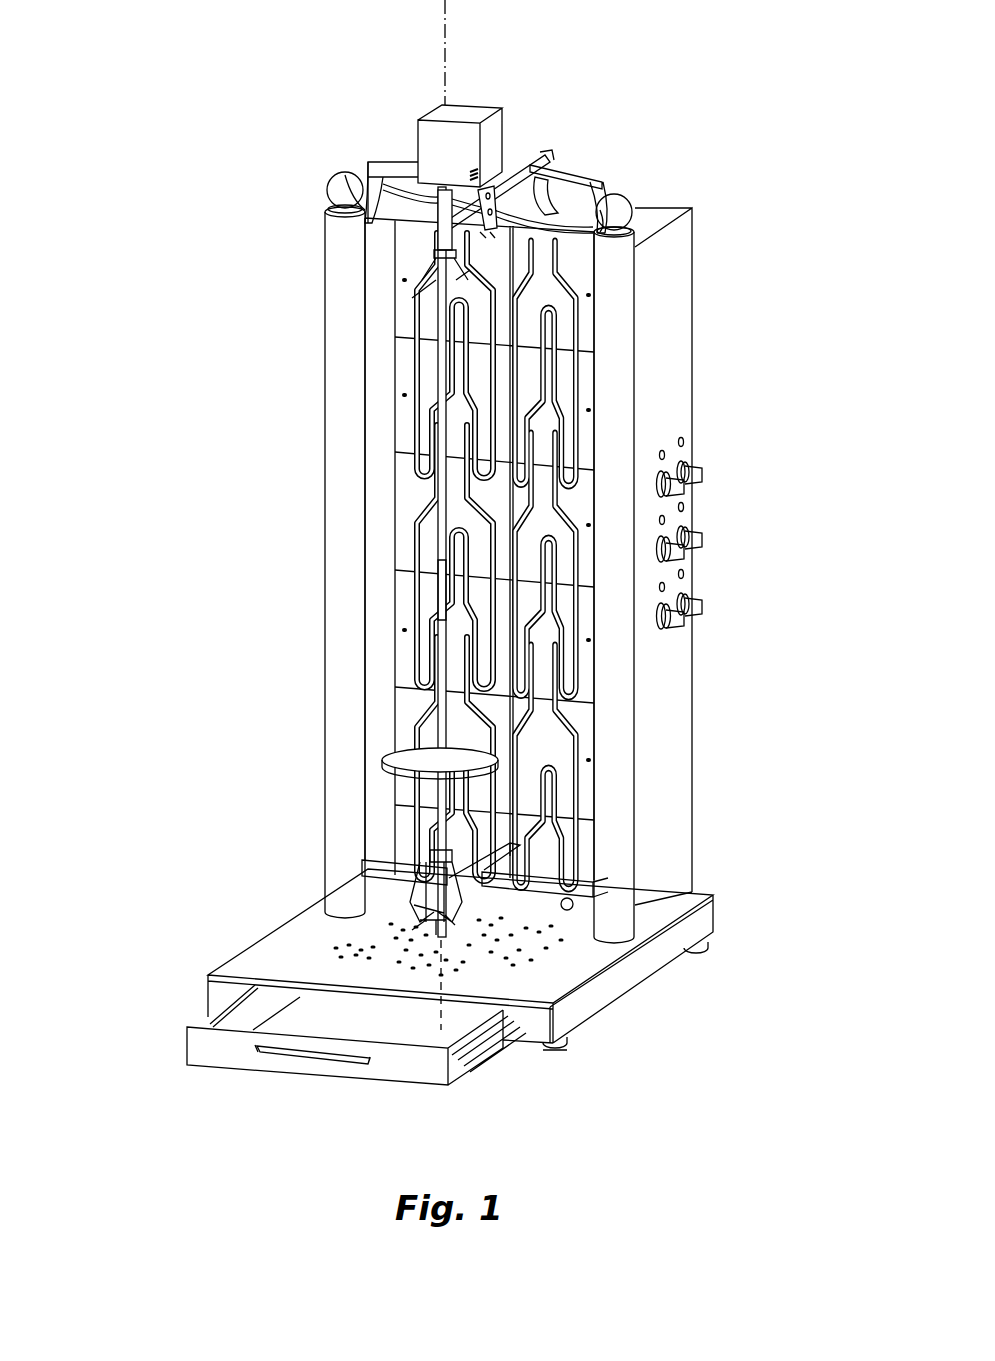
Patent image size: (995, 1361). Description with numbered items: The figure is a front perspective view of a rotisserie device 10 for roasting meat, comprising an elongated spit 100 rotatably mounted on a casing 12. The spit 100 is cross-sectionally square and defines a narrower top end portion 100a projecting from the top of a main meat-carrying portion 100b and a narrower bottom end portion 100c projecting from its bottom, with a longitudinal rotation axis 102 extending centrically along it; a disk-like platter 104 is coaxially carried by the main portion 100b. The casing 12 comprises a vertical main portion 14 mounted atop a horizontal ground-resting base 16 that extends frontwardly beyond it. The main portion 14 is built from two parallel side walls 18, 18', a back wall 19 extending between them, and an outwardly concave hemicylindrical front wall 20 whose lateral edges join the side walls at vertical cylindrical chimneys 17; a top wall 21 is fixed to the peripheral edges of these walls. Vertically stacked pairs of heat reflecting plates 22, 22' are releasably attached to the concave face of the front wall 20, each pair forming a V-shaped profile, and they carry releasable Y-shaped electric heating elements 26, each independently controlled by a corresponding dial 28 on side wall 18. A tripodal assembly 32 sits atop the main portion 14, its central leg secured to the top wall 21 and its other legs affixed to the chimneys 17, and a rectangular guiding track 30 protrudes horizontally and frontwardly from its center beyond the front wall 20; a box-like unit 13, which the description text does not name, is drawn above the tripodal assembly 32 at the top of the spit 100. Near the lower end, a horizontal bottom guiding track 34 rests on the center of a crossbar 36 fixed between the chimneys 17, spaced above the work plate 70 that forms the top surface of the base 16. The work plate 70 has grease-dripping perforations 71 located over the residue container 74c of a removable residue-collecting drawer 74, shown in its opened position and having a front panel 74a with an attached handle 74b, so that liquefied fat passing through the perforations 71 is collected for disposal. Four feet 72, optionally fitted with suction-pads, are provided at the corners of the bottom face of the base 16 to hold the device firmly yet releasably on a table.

The rotisserie device 10 is at (207, 470).
The casing 12 is at (705, 738).
The motor 13 is at (435, 130).
The casing main portion 14 is at (667, 390).
The base 16 is at (259, 936).
The cylindrical chimneys 17 is at (341, 764).
The side wall 18 is at (684, 438).
The side wall 18' is at (306, 178).
The back wall 19 is at (647, 203).
The front wall 20 is at (372, 167).
The top wall 21 is at (647, 217).
The heat reflecting plate 22 is at (639, 565).
The heat reflecting plate 22' is at (359, 557).
The electric heating elements 26 is at (573, 810).
The dials 28 is at (703, 537).
The guiding track 30 is at (515, 167).
The tripodal assembly 32 is at (393, 165).
The bottom guiding track 34 is at (465, 903).
The crossbar 36 is at (683, 895).
The work plate 70 is at (560, 974).
The grease-dripping perforations 71 is at (560, 932).
The feet 72 is at (557, 1050).
The residue-collecting drawer 74 is at (187, 1032).
The front panel 74a is at (217, 1053).
The handle 74b is at (295, 1053).
The residue container 74c is at (298, 1013).
The spit 100 is at (437, 547).
The top end portion 100a is at (425, 288).
The main meat-carrying portion 100b is at (440, 594).
The bottom end portion 100c is at (440, 860).
The longitudinal rotation axis 102 is at (483, 2).
The platter 104 is at (392, 757).